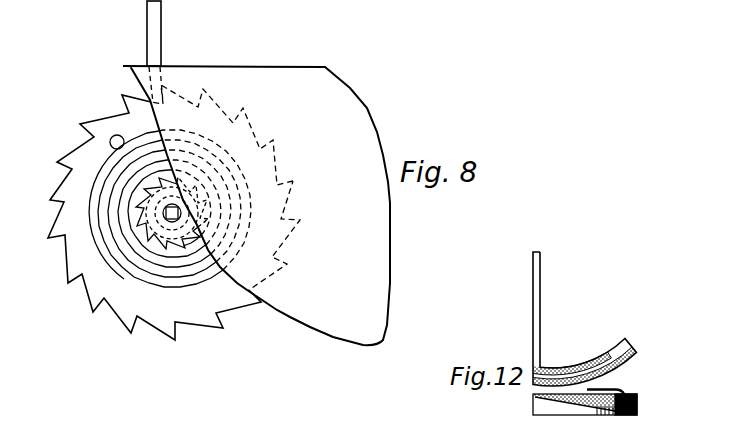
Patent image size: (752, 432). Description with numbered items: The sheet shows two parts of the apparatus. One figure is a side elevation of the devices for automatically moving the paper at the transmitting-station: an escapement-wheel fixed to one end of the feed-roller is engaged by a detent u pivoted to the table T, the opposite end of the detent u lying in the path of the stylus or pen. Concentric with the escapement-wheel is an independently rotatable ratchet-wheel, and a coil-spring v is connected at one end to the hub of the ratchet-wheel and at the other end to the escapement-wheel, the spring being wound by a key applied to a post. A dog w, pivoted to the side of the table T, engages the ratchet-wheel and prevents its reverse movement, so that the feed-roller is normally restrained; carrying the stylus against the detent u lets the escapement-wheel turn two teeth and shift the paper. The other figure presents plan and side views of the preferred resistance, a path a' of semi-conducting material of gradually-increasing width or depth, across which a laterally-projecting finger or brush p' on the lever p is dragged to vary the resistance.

In FIG. 8, the detent u is at (147, 37).
In FIG. 8, the dog w is at (165, 172).
In FIG. 8, the coil-spring v is at (170, 208).
In FIG. 8, the table T is at (256, 205).
In FIG. 12, the lever p is at (574, 319).
In FIG. 12, the finger or brush p' is at (584, 365).
In FIG. 12, the path a' is at (596, 371).